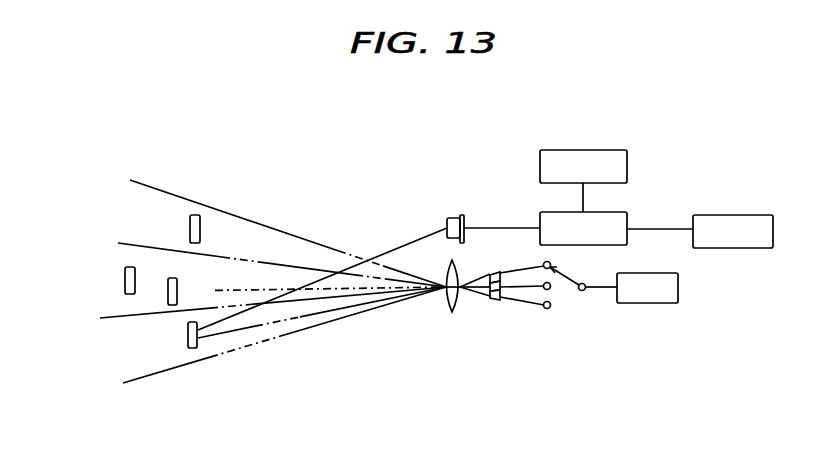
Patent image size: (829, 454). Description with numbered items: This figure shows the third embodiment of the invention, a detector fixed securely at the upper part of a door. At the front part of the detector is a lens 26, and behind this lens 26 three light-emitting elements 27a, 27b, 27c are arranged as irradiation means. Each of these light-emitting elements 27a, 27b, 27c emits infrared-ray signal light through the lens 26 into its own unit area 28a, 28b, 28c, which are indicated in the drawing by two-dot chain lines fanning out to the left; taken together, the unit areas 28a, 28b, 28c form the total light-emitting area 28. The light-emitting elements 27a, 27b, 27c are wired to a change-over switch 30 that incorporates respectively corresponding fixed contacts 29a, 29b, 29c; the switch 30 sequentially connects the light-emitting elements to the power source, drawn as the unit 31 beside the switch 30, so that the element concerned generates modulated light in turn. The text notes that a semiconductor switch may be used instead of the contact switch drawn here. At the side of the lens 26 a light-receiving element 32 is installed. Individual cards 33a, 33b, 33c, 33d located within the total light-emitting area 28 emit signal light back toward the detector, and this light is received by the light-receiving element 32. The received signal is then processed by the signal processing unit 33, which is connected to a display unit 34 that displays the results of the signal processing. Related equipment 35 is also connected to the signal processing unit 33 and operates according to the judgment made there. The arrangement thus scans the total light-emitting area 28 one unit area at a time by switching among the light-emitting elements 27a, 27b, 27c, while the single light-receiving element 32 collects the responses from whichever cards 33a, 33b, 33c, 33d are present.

The lens 26 is at (453, 298).
The light-emitting element 27a is at (492, 273).
The light-emitting element 27b is at (489, 292).
The light-emitting element 27c is at (494, 300).
The total light-emitting area 28 is at (77, 359).
The unit area 28a is at (158, 363).
The unit area 28b is at (243, 277).
The unit area 28c is at (138, 200).
The fixed contact 29a is at (544, 262).
The fixed contact 29b is at (550, 289).
The fixed contact 29c is at (547, 309).
The change-over switch 30 is at (568, 267).
The indicator 31 is at (648, 295).
The light-receiving element 32 is at (450, 220).
The signal processing unit 33 is at (617, 225).
The card 33a is at (188, 343).
The card 33b is at (168, 290).
The card 33c is at (200, 217).
The card 33d is at (125, 273).
The display unit 34 is at (582, 173).
The related equipment 35 is at (730, 228).